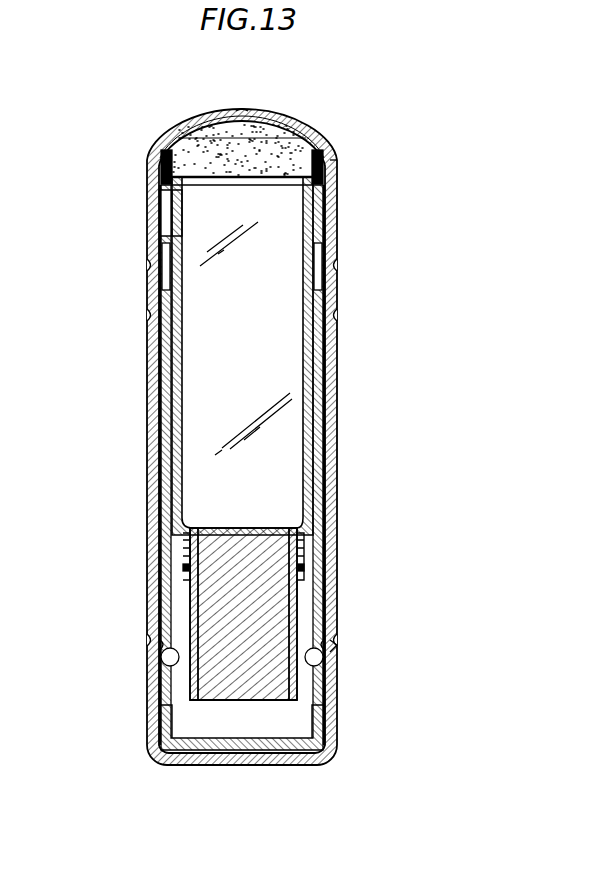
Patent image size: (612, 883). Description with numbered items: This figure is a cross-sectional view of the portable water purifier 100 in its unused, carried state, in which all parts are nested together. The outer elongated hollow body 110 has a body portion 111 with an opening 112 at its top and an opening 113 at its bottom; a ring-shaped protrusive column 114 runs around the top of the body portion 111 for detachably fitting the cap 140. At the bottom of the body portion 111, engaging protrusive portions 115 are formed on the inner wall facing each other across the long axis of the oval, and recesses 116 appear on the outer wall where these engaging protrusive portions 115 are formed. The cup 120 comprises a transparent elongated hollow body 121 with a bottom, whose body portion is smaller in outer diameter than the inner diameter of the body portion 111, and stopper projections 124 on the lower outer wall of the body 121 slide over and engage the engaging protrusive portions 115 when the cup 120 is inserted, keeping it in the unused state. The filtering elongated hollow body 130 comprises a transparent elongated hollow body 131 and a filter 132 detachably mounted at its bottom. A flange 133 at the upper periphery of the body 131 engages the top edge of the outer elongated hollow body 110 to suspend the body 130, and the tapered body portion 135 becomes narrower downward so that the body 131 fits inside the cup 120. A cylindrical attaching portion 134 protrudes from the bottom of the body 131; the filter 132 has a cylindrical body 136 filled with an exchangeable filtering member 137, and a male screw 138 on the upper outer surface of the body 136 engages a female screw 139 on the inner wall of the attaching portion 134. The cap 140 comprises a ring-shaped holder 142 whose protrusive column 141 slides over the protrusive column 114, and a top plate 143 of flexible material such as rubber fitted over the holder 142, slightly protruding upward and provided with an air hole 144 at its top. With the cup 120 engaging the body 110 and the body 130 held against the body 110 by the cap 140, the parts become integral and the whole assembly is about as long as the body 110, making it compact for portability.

The portable water purifier 100 is at (222, 74).
The outer elongated hollow body 110 is at (346, 412).
The body portion 111 is at (150, 405).
The opening 112 is at (160, 756).
The opening 113 is at (337, 705).
The ring-shaped protrusive column 114 is at (162, 192).
The engaging protrusive portions 115 is at (168, 660).
The recesses 116 is at (337, 646).
The cup 120 is at (300, 776).
The transparent elongated hollow body 121 is at (313, 460).
The stopper projections 124 is at (148, 638).
The filtering elongated hollow body 130 is at (166, 345).
The transparent elongated hollow body 131 is at (318, 276).
The filter 132 is at (223, 712).
The flange 133 is at (158, 180).
The cylindrical attaching portion 134 is at (312, 556).
The body portion 135 is at (313, 355).
The cylindrical body 136 is at (195, 600).
The filtering member 137 is at (273, 603).
The male screw 138 is at (310, 532).
The female screw 139 is at (205, 518).
The cap 140 is at (346, 200).
The protrusive column 141 is at (165, 262).
The ring-shaped holder 142 is at (336, 175).
The top plate 143 is at (298, 128).
The air hole 144 is at (243, 112).